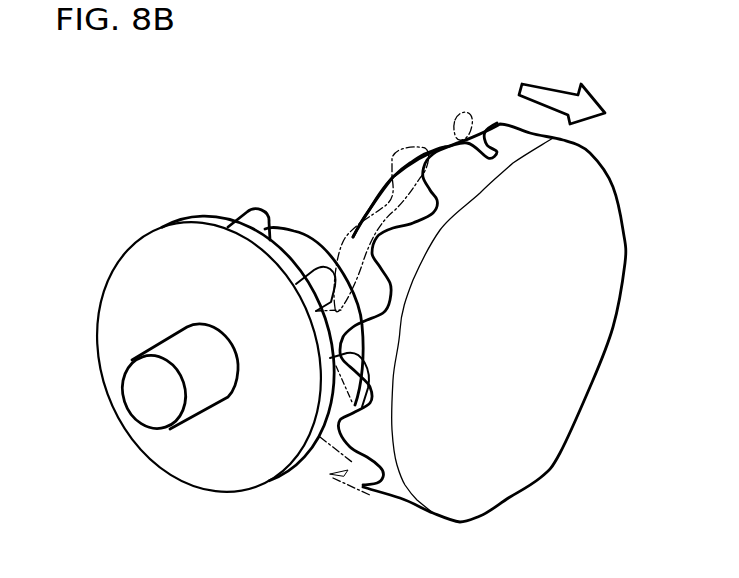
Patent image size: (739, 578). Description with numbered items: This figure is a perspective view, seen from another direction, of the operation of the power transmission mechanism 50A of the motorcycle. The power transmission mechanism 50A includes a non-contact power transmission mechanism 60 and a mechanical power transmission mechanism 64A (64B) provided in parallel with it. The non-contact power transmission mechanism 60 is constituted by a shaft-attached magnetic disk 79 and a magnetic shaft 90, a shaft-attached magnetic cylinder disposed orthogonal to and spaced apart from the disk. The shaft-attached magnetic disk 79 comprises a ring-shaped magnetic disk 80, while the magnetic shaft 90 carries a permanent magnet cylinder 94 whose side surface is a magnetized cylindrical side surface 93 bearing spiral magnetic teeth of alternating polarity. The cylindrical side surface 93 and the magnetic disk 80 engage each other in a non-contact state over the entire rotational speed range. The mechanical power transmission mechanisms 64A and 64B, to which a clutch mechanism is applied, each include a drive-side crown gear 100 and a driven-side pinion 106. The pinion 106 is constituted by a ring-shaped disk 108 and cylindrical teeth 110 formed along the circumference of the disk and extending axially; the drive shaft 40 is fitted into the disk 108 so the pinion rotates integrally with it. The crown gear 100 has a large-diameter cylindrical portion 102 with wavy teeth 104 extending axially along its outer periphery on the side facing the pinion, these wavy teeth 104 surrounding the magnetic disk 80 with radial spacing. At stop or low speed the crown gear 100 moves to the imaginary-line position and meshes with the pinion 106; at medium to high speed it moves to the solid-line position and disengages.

The power transmission mechanism 50A is at (247, 97).
The crown gear 100 is at (487, 48).
The large-diameter cylindrical portion 102 is at (470, 140).
The wavy teeth 104 is at (402, 185).
The non-contact power transmission mechanism 60 is at (347, 129).
The shaft-attached magnetic disk 79 is at (371, 198).
The magnetic disk 80 is at (386, 199).
The magnetic shaft 90 is at (282, 228).
The magnetized cylindrical side surface 93 is at (293, 242).
The permanent magnet cylinder 94 is at (299, 259).
The pinion 106 is at (213, 153).
The disk 108 is at (152, 260).
The cylindrical teeth 110 is at (248, 222).
The drive shaft 40 is at (200, 400).
The mechanical power transmission mechanism 64A is at (355, 512).
The mechanical power transmission mechanism 64B is at (297, 499).